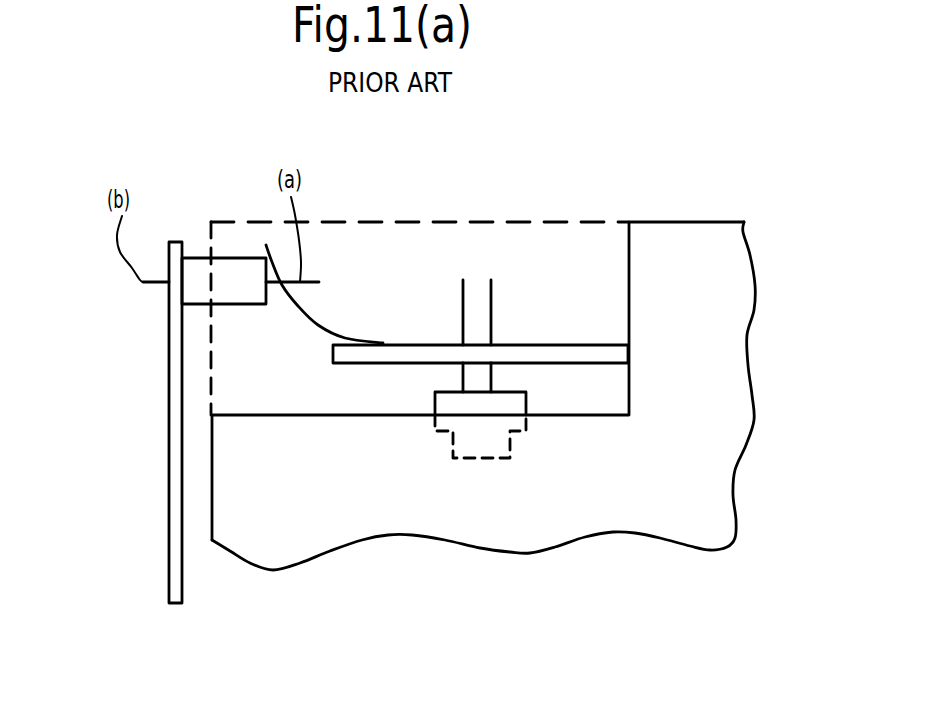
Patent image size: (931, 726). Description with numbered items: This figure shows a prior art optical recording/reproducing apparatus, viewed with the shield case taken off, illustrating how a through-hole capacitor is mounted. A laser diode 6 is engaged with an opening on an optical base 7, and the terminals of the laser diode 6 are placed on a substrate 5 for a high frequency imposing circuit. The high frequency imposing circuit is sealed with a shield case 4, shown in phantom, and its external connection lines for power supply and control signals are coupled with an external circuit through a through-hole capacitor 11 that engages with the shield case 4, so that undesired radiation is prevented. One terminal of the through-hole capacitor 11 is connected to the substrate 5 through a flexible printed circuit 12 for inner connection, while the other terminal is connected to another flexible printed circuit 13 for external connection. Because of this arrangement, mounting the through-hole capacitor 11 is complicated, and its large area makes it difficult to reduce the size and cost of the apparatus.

The shield case 4 is at (527, 220).
The substrate 5 is at (562, 352).
The laser diode 6 is at (515, 405).
The optical base 7 is at (680, 345).
The through-hole capacitor 11 is at (228, 268).
The flexible printed circuit 12 is at (318, 325).
The flexible printed circuit 13 is at (177, 578).